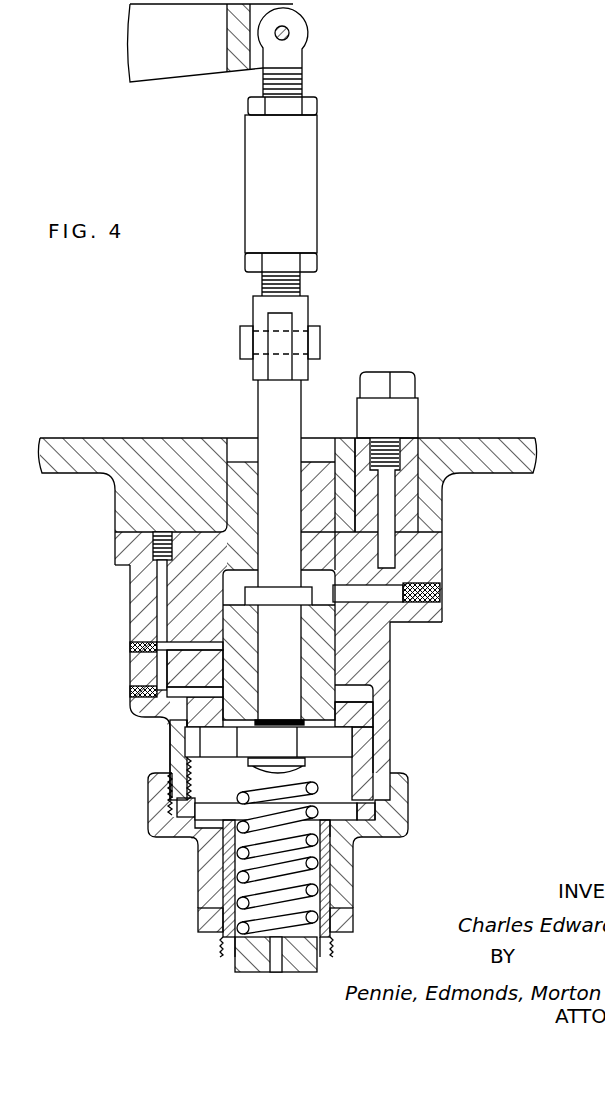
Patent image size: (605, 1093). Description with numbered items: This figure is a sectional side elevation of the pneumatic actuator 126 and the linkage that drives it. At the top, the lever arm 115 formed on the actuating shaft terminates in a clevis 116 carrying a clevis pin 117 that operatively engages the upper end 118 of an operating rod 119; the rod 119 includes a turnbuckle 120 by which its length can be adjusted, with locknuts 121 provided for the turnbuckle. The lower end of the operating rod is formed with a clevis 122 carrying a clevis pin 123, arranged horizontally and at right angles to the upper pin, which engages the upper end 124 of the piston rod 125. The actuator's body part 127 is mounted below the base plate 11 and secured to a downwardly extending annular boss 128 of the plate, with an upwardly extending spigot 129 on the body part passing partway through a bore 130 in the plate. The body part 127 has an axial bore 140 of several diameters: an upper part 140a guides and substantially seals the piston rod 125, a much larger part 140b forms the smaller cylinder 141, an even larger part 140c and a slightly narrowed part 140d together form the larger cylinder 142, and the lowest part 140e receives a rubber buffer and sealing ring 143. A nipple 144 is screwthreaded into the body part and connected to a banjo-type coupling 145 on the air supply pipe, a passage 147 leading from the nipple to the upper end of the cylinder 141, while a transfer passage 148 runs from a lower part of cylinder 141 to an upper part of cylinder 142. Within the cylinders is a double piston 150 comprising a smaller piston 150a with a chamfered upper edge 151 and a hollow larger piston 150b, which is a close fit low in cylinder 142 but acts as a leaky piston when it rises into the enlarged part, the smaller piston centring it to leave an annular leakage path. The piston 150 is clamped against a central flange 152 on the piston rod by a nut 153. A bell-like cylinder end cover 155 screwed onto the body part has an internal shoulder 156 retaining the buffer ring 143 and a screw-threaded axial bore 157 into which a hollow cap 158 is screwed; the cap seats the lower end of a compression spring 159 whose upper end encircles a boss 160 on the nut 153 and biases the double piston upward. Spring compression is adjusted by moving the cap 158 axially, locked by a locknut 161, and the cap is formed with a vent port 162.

The base plate 11 is at (482, 453).
The lever arm 115 is at (197, 62).
The clevis 116 is at (243, 62).
The clevis pin 117 is at (290, 32).
The upper end of operating rod 118 is at (292, 54).
The operating rod 119 is at (300, 190).
The turnbuckle 120 is at (298, 148).
The locknuts 121 is at (306, 103).
The clevis 122 is at (270, 307).
The clevis pin 123 is at (244, 347).
The upper end of piston rod 124 is at (285, 367).
The piston rod 125 is at (290, 397).
The pneumatic actuator 126 is at (373, 677).
The body part 127 is at (145, 602).
The annular boss 128 is at (138, 518).
The spigot 129 is at (243, 490).
The bore 130 is at (337, 458).
The axial bore 140 is at (188, 790).
The upper part of bore 140a is at (288, 473).
The bore part 140b is at (224, 597).
The bore part 140c is at (190, 748).
The bore part 140d is at (165, 781).
The lowest bore part 140e is at (172, 808).
The smaller cylinder 141 is at (262, 679).
The larger cylinder 142 is at (187, 765).
The rubber buffer and sealing ring 143 is at (165, 825).
The nipple 144 is at (405, 448).
The banjo-type coupling 145 is at (408, 415).
The passage 147 is at (440, 585).
The transfer passage 148 is at (167, 660).
The double piston 150 is at (363, 717).
The smaller piston 150a is at (313, 672).
The larger piston 150b is at (363, 750).
The chamfered upper edge 151 is at (315, 622).
The central flange 152 is at (281, 602).
The nut 153 is at (352, 757).
The cylinder end cover 155 is at (387, 813).
The internal shoulder 156 is at (373, 830).
The screw-threaded axial bore 157 is at (347, 895).
The hollow cap 158 is at (337, 870).
The compression spring 159 is at (230, 878).
The boss 160 is at (293, 770).
The locknut 161 is at (353, 925).
The vent port 162 is at (278, 955).